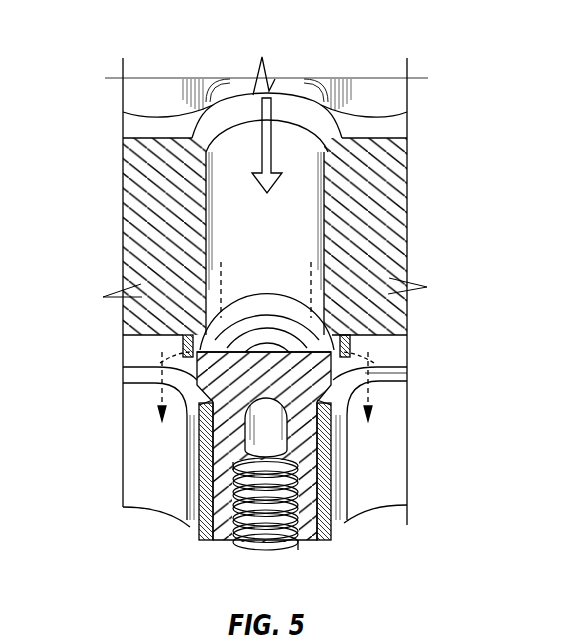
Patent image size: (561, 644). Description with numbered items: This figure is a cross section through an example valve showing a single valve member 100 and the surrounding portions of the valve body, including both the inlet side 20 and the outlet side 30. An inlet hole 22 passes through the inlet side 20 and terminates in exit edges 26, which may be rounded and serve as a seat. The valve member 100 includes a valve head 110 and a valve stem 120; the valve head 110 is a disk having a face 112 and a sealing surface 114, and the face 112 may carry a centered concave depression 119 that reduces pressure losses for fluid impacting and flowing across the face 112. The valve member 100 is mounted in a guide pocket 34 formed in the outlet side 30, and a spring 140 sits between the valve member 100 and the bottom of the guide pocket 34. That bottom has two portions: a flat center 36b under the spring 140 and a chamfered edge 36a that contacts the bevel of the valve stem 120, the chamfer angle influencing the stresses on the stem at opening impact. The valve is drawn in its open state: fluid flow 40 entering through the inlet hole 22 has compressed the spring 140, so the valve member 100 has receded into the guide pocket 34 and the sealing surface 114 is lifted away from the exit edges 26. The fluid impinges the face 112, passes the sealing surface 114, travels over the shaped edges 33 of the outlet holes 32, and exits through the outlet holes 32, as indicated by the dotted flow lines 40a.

The inlet side 20 is at (397, 187).
The inlet hole 22 is at (237, 192).
The fluid flow 40 is at (266, 114).
The dotted flow lines 40a is at (158, 390).
The face 112 is at (228, 330).
The sealing surface 114 is at (200, 350).
The concave depression 119 is at (272, 348).
The exit edges 26 is at (333, 322).
The outlet side 30 is at (397, 347).
The shaped edges 33 is at (397, 373).
The valve head 110 is at (335, 385).
The valve member 100 is at (226, 430).
The valve stem 120 is at (307, 430).
The outlet holes 32 is at (137, 477).
The guide pocket 34 is at (210, 470).
The spring 140 is at (232, 487).
The chamfered edge 36a is at (220, 522).
The flat center 36b is at (263, 548).